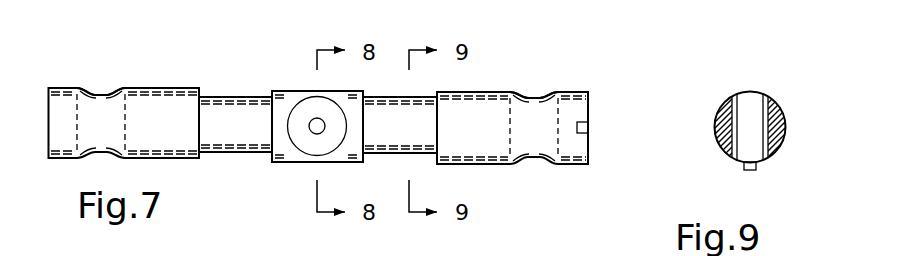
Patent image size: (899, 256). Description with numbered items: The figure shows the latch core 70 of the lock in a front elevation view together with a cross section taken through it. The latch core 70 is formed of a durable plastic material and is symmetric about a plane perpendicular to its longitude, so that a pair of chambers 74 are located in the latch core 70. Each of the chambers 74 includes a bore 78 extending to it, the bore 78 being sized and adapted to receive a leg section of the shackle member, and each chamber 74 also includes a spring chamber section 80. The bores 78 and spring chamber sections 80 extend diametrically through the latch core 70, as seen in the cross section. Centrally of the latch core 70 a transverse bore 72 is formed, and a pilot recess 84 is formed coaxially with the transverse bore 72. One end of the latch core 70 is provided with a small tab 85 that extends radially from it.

In FIG. 7, the latch core 70 is at (502, 58).
In FIG. 9, the latch core 70 is at (708, 95).
In FIG. 7, the transverse bore 72 is at (306, 140).
In FIG. 9, the chamber 74 is at (748, 109).
In FIG. 7, the bore 78 is at (103, 84).
In FIG. 9, the spring chamber section 80 is at (758, 142).
In FIG. 7, the pilot recess 84 is at (311, 117).
In FIG. 7, the tab 85 is at (589, 134).
In FIG. 9, the tab 85 is at (748, 172).